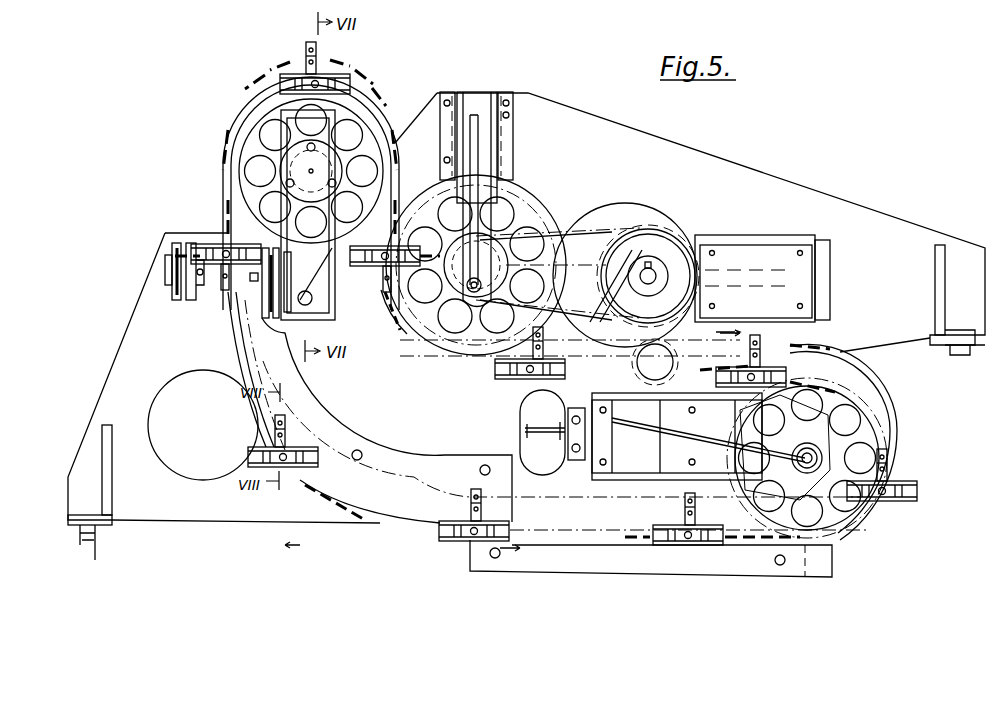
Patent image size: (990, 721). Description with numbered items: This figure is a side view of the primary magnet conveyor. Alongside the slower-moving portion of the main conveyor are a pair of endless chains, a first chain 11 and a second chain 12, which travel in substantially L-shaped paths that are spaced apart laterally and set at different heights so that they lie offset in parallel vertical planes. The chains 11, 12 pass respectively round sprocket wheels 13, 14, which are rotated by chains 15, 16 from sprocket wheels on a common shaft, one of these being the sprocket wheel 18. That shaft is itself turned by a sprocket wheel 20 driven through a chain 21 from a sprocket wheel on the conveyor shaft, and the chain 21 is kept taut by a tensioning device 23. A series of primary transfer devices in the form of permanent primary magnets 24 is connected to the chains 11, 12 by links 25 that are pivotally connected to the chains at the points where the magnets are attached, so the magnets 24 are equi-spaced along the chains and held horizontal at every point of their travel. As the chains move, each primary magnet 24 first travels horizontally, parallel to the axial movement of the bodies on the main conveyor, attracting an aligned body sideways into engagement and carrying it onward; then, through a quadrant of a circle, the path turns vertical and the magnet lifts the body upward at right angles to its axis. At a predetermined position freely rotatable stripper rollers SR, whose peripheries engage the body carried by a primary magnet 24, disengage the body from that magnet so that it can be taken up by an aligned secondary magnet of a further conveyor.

The first chain 11 is at (715, 335).
The second chain 12 is at (605, 360).
The sprocket wheel 13 is at (540, 212).
The sprocket wheel 14 is at (420, 330).
The chain 15 is at (598, 232).
The chain 16 is at (615, 330).
The sprocket wheel 18 is at (600, 305).
The sprocket wheel 20 is at (672, 232).
The chain 21 is at (600, 258).
The tensioning device 23 is at (698, 436).
The primary magnets 24 is at (345, 80).
The links 25 is at (310, 50).
The stripper rollers SR is at (185, 300).